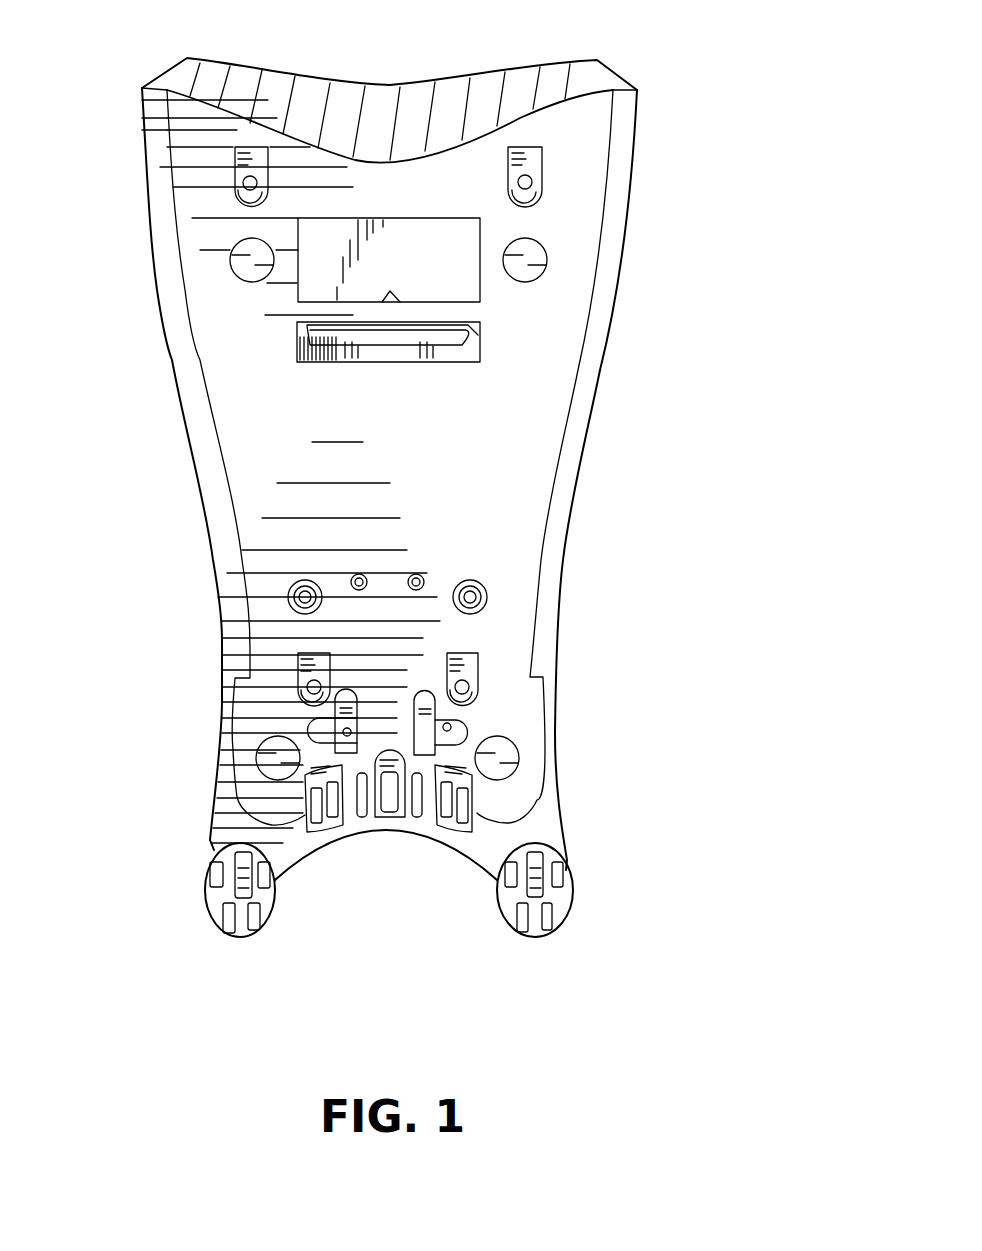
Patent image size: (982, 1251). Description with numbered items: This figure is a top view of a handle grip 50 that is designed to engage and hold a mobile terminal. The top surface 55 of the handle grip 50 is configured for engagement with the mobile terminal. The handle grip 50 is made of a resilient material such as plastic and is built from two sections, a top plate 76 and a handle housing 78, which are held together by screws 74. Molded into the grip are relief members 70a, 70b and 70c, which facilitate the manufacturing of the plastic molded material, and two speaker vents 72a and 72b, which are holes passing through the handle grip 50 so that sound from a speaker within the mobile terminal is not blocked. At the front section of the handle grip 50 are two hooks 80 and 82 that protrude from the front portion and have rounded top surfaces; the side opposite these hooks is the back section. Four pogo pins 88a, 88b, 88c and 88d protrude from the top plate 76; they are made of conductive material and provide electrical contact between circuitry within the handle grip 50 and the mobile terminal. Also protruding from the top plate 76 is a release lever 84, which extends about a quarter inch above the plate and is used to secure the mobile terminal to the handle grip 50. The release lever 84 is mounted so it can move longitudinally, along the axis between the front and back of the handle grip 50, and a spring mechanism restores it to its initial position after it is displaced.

The handle grip 50 is at (712, 279).
The top surface 55 is at (637, 173).
The relief member 70a is at (320, 830).
The relief member 70b is at (390, 830).
The relief member 70c is at (447, 830).
The speaker vent 72a is at (336, 722).
The speaker vent 72b is at (467, 725).
The screw 74 is at (512, 180).
The top plate 76 is at (182, 124).
The handle housing 78 is at (153, 178).
The hook 80 is at (233, 937).
The hook 82 is at (533, 937).
The release lever 84 is at (472, 330).
The pogo pin 88a is at (290, 583).
The pogo pin 88b is at (359, 574).
The pogo pin 88c is at (421, 574).
The pogo pin 88d is at (488, 598).